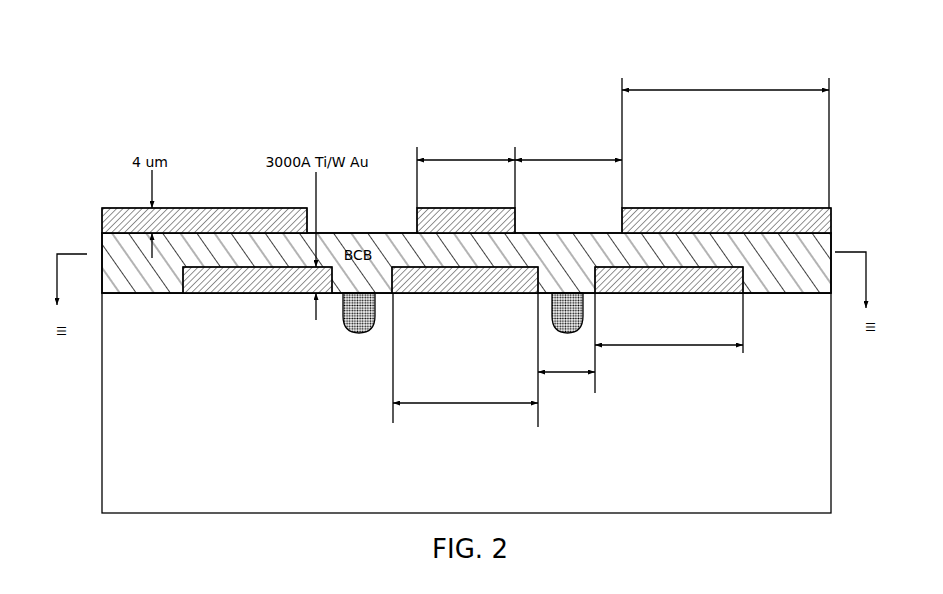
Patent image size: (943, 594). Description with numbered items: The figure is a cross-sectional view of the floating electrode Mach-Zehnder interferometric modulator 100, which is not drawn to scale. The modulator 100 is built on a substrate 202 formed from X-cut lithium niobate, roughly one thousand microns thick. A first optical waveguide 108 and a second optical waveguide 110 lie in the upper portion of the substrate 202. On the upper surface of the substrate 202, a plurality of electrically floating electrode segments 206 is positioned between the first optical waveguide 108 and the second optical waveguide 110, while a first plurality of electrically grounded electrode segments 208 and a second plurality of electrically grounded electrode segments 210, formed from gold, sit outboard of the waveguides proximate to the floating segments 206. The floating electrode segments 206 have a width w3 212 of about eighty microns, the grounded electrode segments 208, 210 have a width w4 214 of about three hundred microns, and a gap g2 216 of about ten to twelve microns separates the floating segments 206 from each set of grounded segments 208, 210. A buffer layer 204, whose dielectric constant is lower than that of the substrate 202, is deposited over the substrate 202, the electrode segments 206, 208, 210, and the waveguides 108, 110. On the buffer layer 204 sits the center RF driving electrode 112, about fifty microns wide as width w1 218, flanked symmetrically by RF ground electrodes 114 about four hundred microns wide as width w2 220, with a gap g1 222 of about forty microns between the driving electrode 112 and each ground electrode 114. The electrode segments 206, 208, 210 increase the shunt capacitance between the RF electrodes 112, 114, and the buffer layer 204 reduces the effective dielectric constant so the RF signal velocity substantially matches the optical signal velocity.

The floating electrode MZI modulator 100 is at (455, 45).
The first optical waveguide 108 is at (352, 333).
The second optical waveguide 110 is at (558, 333).
The RF driving electrode 112 is at (460, 208).
The RF ground electrodes 114 is at (235, 208).
The substrate 202 is at (102, 412).
The buffer layer 204 is at (122, 293).
The electrically floating electrode segments 206 is at (466, 293).
The first plurality of electrically grounded electrode segments 208 is at (237, 293).
The second plurality of electrically grounded electrode segments 210 is at (670, 295).
The width w3 212 is at (468, 410).
The width w4 214 is at (675, 372).
The gap g2 216 is at (569, 400).
The width w1 218 is at (467, 140).
The width w2 220 is at (726, 75).
The gap g1 222 is at (565, 140).